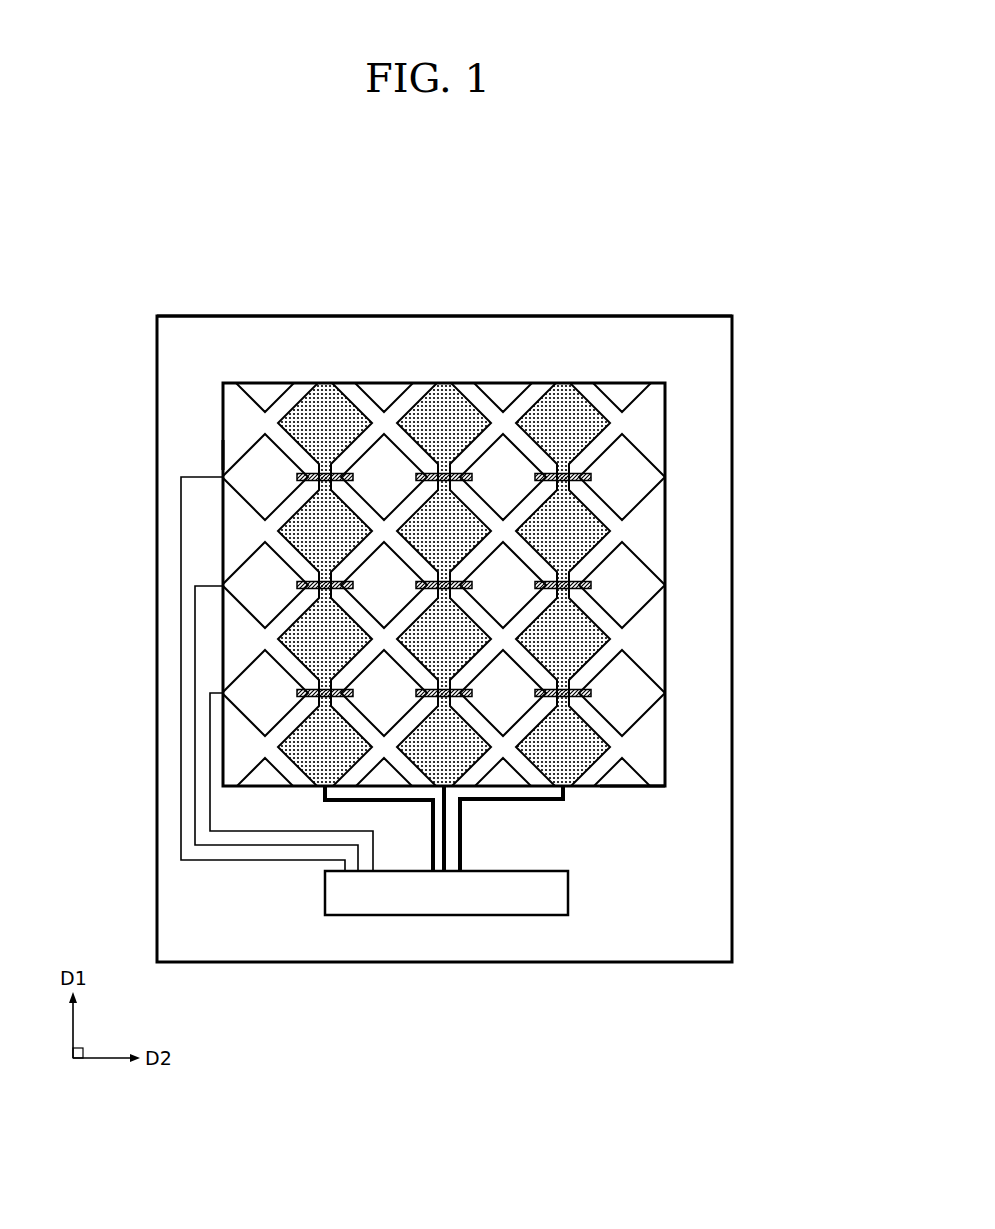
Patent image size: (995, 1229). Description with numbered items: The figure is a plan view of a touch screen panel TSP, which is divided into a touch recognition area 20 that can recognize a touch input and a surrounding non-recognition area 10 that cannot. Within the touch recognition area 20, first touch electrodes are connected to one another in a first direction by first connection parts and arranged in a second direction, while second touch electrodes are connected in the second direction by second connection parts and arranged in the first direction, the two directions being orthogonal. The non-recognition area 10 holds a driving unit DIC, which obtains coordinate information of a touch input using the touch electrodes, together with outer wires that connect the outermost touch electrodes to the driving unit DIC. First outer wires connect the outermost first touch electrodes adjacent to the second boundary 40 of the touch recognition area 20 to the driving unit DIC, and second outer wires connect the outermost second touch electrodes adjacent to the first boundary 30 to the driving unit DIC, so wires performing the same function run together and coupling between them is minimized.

The non-recognition area 10 is at (733, 888).
The touch recognition area 20 is at (632, 400).
The first boundary 30 is at (222, 455).
The second boundary 40 is at (636, 787).
The touch screen panel TSP is at (756, 287).
The driving unit DIC is at (570, 890).